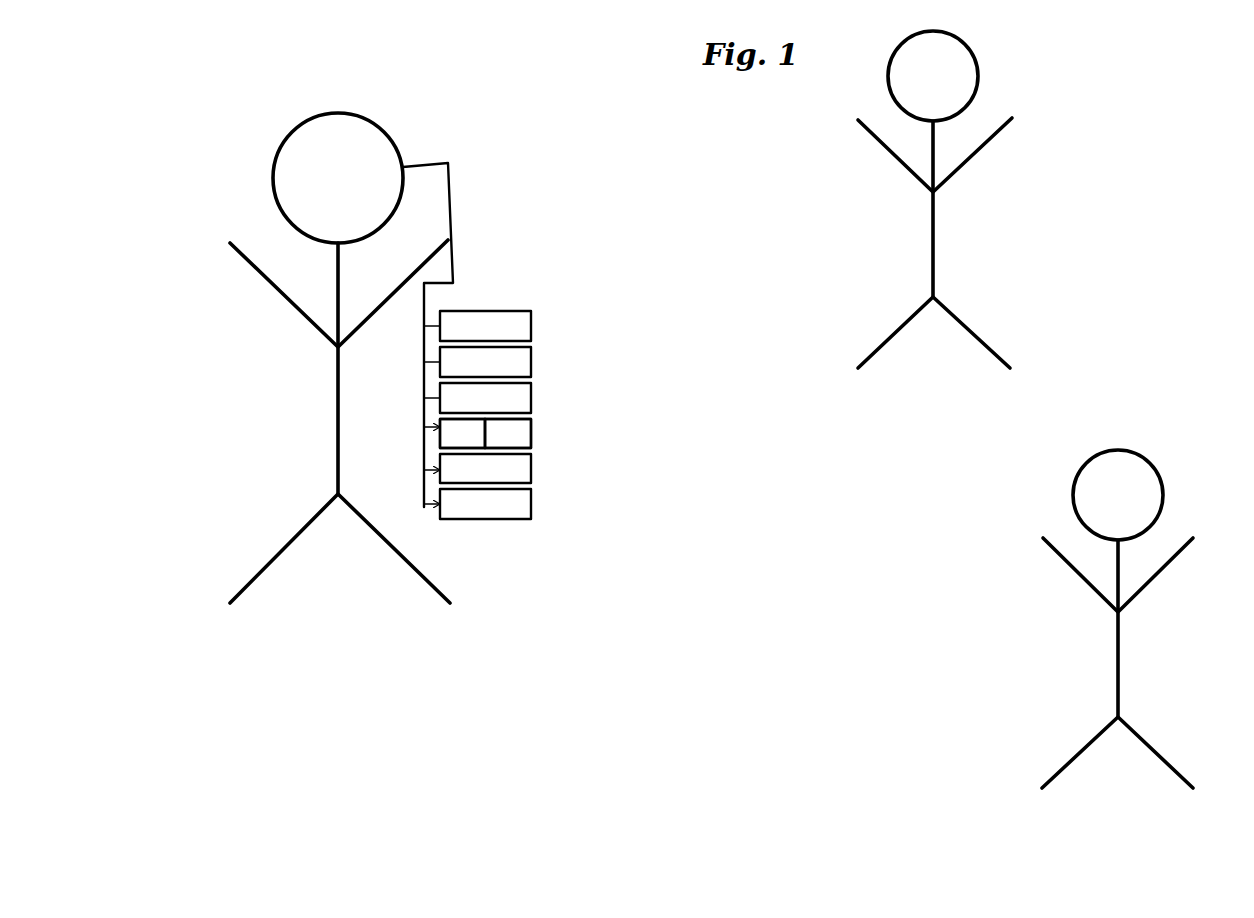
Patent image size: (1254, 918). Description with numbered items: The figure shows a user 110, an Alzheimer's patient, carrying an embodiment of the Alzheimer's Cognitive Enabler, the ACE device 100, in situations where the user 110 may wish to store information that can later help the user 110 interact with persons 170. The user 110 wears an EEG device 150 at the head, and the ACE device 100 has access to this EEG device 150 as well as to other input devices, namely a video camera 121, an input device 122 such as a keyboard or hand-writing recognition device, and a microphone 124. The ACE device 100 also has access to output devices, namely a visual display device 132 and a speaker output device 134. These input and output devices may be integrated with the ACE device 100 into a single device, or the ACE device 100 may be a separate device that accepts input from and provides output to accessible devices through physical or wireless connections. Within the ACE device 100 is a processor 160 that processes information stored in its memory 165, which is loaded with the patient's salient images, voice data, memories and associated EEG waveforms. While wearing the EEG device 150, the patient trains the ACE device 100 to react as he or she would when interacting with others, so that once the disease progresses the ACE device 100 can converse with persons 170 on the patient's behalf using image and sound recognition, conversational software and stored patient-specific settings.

The ACE device 100 is at (510, 434).
The user 110 is at (337, 480).
The video camera 121 is at (509, 326).
The input device 122 is at (510, 364).
The microphone 124 is at (511, 398).
The visual display device 132 is at (510, 469).
The speaker output device 134 is at (509, 504).
The EEG device 150 is at (429, 145).
The processor 160 is at (458, 433).
The memory 165 is at (513, 433).
The persons 170 is at (1051, 409).